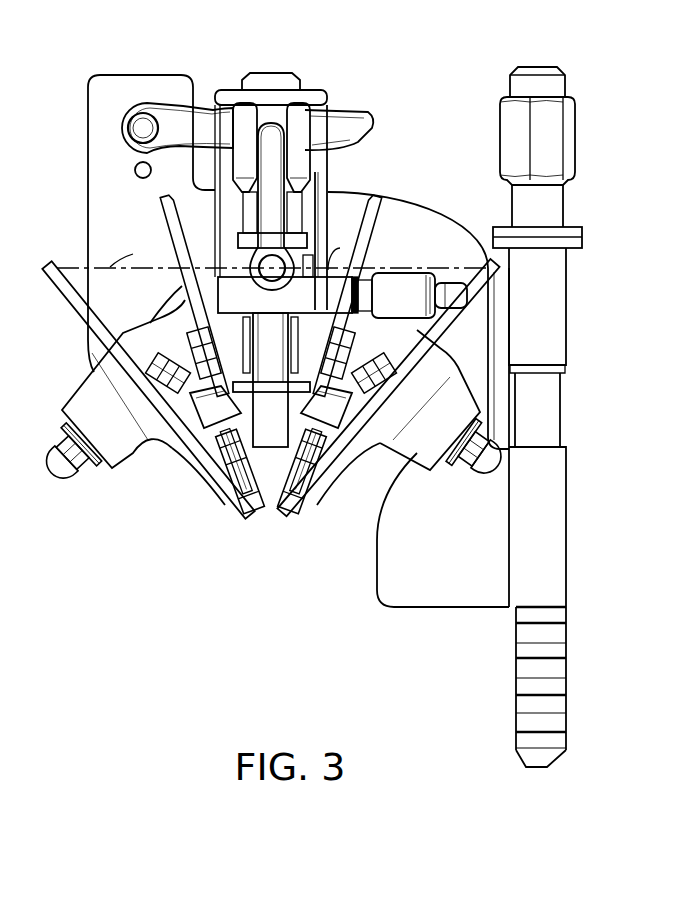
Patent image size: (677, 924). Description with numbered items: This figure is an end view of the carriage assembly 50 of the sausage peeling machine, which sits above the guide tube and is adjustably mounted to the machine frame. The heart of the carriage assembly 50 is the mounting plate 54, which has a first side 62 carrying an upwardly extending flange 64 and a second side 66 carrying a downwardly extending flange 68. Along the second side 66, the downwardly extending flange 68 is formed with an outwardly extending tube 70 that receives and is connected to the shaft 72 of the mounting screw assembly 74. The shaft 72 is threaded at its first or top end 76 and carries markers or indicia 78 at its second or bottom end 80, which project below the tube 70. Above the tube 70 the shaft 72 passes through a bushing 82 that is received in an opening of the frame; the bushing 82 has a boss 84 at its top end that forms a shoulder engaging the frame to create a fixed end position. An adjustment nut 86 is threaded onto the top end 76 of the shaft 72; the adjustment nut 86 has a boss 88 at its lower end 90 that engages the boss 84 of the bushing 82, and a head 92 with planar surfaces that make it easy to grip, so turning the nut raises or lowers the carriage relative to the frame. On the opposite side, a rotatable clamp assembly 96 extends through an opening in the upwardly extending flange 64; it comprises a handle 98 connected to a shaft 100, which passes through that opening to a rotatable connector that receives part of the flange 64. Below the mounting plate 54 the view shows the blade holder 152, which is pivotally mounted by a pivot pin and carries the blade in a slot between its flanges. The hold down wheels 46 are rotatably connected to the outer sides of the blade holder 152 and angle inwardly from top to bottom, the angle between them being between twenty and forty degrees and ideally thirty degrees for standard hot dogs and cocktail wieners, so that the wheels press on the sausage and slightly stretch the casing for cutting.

The hold down wheels 46 is at (82, 397).
The carriage assembly 50 is at (414, 57).
The mounting plate 54 is at (118, 237).
The first side 62 is at (88, 180).
The upwardly extending flange 64 is at (148, 86).
The second side 66 is at (490, 400).
The downwardly extending flange 68 is at (417, 590).
The tube 70 is at (560, 531).
The shaft 72 is at (556, 422).
The mounting screw assembly 74 is at (585, 287).
The top end 76 is at (540, 66).
The indicia 78 is at (556, 705).
The bottom end 80 is at (537, 768).
The bushing 82 is at (562, 310).
The boss 84 is at (582, 243).
The adjustment nut 86 is at (576, 137).
The boss 88 is at (582, 232).
The lower end 90 is at (510, 226).
The head 92 is at (500, 136).
The rotatable clamp assembly 96 is at (204, 65).
The handle 98 is at (340, 100).
The shaft 100 is at (128, 126).
The blade holder 152 is at (262, 447).